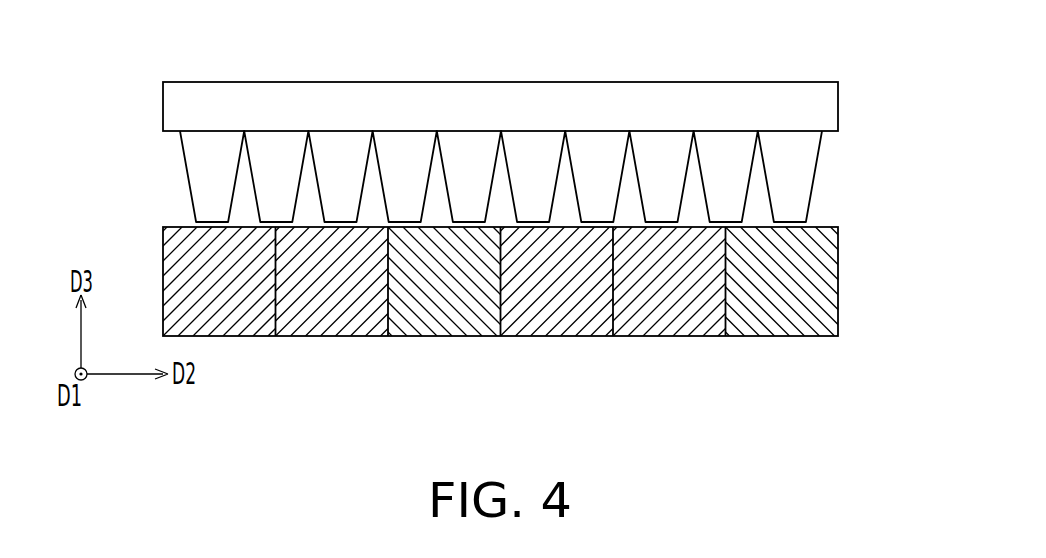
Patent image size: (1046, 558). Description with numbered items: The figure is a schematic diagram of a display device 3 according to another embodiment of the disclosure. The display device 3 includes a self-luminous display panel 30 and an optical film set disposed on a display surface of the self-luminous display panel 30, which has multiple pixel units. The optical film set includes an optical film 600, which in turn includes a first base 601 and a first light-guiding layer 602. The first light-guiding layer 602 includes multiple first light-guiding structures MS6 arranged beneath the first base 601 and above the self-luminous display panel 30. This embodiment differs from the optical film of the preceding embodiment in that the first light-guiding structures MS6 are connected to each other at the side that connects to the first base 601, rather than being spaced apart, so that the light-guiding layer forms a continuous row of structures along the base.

The display device 3 is at (544, 207).
The optical film 600 is at (485, 111).
The first base 601 is at (172, 107).
The first light-guiding layer 602 is at (527, 176).
The first light-guiding structures MS6 is at (800, 176).
The self-luminous display panel 30 is at (825, 288).